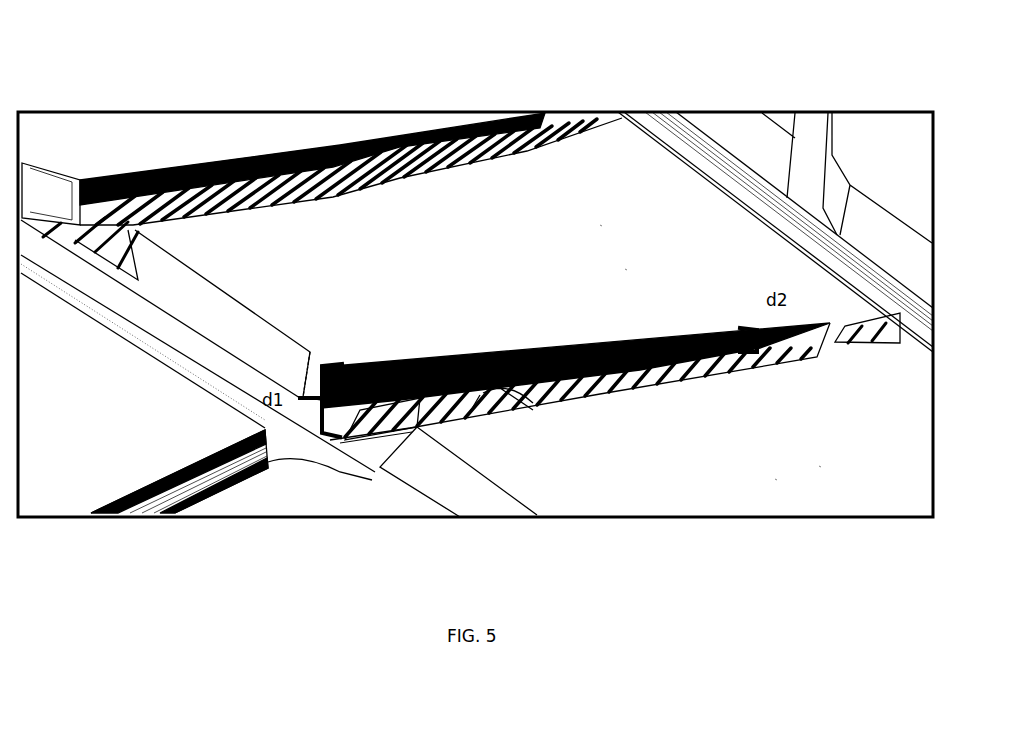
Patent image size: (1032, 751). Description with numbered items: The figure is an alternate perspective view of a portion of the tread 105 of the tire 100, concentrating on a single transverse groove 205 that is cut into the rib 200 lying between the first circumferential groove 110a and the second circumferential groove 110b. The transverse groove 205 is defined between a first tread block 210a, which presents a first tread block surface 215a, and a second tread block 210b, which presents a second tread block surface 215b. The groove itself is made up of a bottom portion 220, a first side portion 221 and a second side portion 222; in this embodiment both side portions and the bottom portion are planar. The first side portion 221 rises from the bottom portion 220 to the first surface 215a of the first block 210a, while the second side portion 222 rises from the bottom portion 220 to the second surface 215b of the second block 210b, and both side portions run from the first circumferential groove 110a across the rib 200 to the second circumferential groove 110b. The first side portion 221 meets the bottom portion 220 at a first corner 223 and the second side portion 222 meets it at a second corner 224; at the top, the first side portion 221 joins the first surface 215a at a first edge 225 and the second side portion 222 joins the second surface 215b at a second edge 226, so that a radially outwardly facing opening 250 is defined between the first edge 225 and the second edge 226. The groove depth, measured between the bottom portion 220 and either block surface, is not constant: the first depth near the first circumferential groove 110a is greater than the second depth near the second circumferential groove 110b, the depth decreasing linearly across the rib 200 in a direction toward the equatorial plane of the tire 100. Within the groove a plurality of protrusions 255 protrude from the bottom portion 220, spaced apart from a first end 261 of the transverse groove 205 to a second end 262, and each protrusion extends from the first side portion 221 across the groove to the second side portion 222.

The tire 100 is at (230, 79).
The tread 105 is at (113, 136).
The rib 200 is at (413, 206).
The transverse groove 205 is at (463, 338).
The first tread block 210a is at (626, 268).
The second tread block 210b is at (820, 465).
The first tread block surface 215a is at (601, 222).
The second tread block surface 215b is at (775, 477).
The bottom portion 220 is at (353, 420).
The first side portion 221 is at (433, 380).
The second side portion 222 is at (533, 403).
The first corner 223 is at (558, 370).
The second corner 224 is at (398, 467).
The first edge 225 is at (597, 355).
The second edge 226 is at (583, 397).
The radially outwardly facing opening 250 is at (637, 338).
The plurality of protrusions 255 is at (673, 355).
The first end 261 is at (358, 392).
The second end 262 is at (867, 337).
The first circumferential groove 110a is at (175, 327).
The second circumferential groove 110b is at (845, 270).